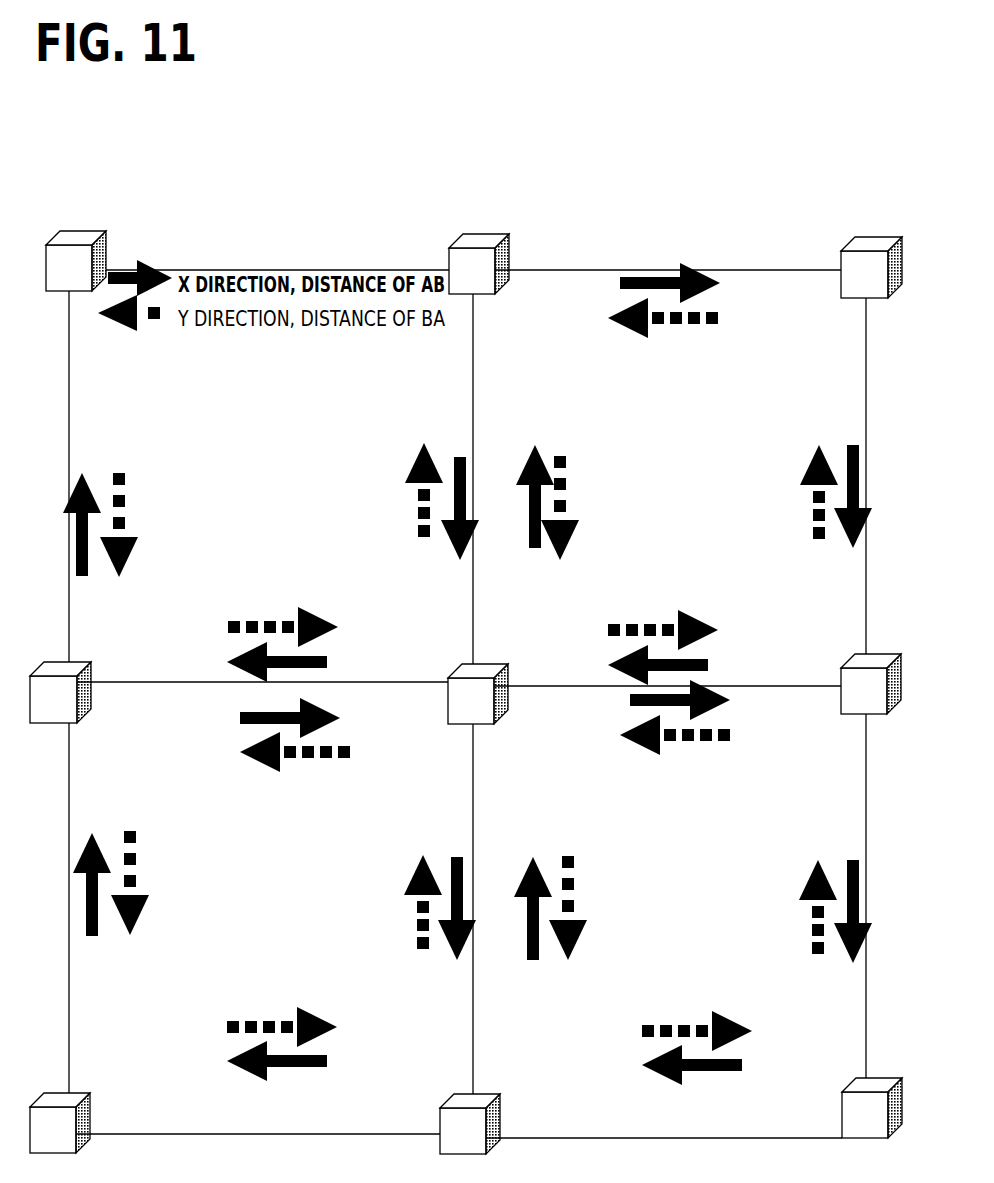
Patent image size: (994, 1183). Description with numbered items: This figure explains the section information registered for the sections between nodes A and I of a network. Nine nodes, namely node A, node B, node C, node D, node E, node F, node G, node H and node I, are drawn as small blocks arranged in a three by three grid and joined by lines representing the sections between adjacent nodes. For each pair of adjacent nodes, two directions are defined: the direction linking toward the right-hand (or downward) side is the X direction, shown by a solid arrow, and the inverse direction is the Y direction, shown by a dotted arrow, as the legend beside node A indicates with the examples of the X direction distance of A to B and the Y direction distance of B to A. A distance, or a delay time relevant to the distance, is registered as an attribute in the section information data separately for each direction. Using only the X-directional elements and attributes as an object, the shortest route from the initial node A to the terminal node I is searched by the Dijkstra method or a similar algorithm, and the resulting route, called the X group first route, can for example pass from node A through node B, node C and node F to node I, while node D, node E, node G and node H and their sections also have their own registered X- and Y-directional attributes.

The node A is at (76, 261).
The node B is at (479, 264).
The node C is at (871, 267).
The node D is at (60, 692).
The node E is at (478, 694).
The node F is at (871, 684).
The node G is at (60, 1123).
The node H is at (470, 1124).
The node I is at (872, 1108).